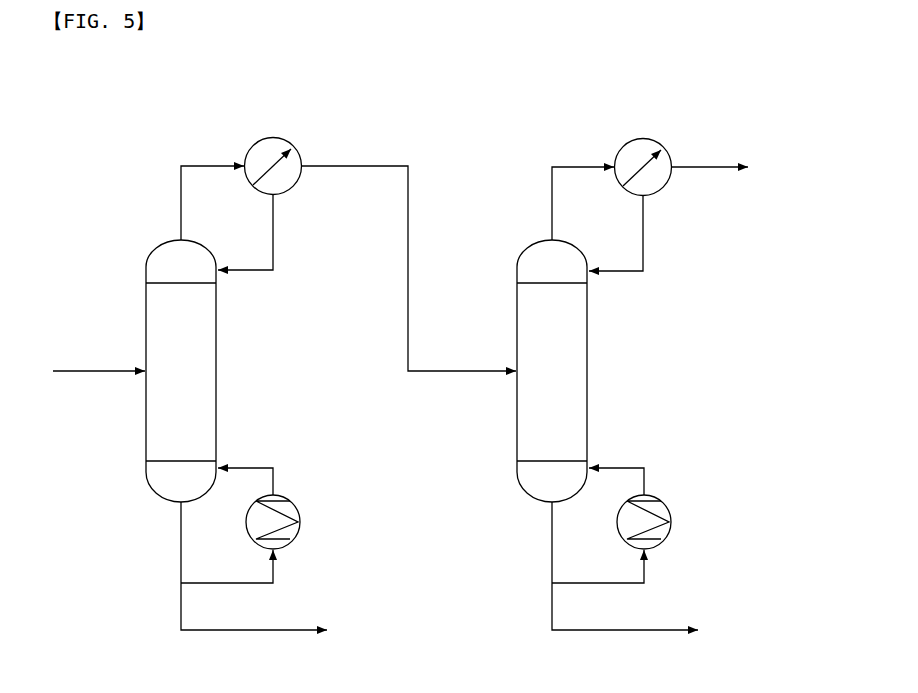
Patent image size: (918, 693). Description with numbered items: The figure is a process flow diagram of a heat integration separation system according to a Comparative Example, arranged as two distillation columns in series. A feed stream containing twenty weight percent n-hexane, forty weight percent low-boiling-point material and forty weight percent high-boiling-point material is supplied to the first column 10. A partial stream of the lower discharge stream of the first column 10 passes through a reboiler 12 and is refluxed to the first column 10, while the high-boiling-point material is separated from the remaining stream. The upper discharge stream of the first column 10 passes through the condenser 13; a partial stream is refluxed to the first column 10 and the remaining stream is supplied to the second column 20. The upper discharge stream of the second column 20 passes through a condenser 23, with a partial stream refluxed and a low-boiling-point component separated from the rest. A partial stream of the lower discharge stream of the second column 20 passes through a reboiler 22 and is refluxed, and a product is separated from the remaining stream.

The first column 10 is at (216, 371).
The reboiler 12 is at (299, 526).
The condenser 13 is at (300, 152).
The second column 20 is at (587, 370).
The reboiler 22 is at (670, 526).
The condenser 23 is at (671, 155).